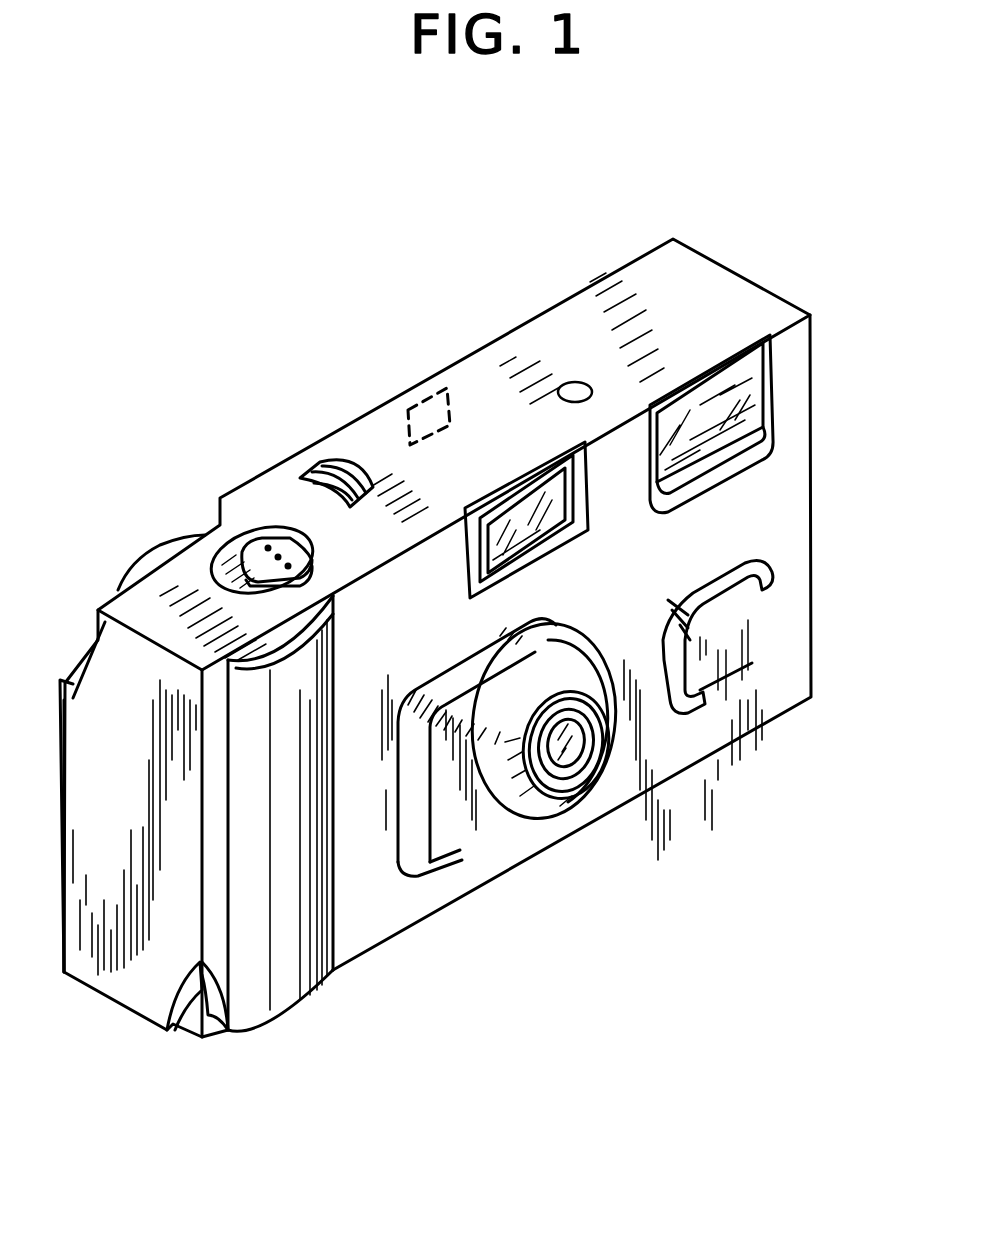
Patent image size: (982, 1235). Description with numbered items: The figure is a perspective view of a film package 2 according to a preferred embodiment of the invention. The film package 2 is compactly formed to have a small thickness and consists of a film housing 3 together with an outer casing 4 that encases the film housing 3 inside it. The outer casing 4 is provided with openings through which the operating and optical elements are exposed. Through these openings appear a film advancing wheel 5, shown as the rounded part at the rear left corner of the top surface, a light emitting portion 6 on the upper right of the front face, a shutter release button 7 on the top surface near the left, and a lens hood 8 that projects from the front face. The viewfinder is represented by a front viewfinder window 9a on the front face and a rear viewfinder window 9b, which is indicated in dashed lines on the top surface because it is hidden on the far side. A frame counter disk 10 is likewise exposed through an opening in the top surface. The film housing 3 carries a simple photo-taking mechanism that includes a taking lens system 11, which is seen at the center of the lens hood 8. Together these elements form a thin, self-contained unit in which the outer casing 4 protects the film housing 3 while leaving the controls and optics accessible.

The film package 2 is at (536, 262).
The film housing 3 is at (293, 998).
The outer casing 4 is at (138, 998).
The film advancing wheel 5 is at (153, 548).
The light emitting portion 6 is at (757, 397).
The shutter release button 7 is at (253, 553).
The lens hood 8 is at (477, 845).
The front viewfinder window 9a is at (590, 492).
The rear viewfinder window 9b is at (427, 397).
The frame counter disk 10 is at (343, 487).
The taking lens system 11 is at (567, 745).